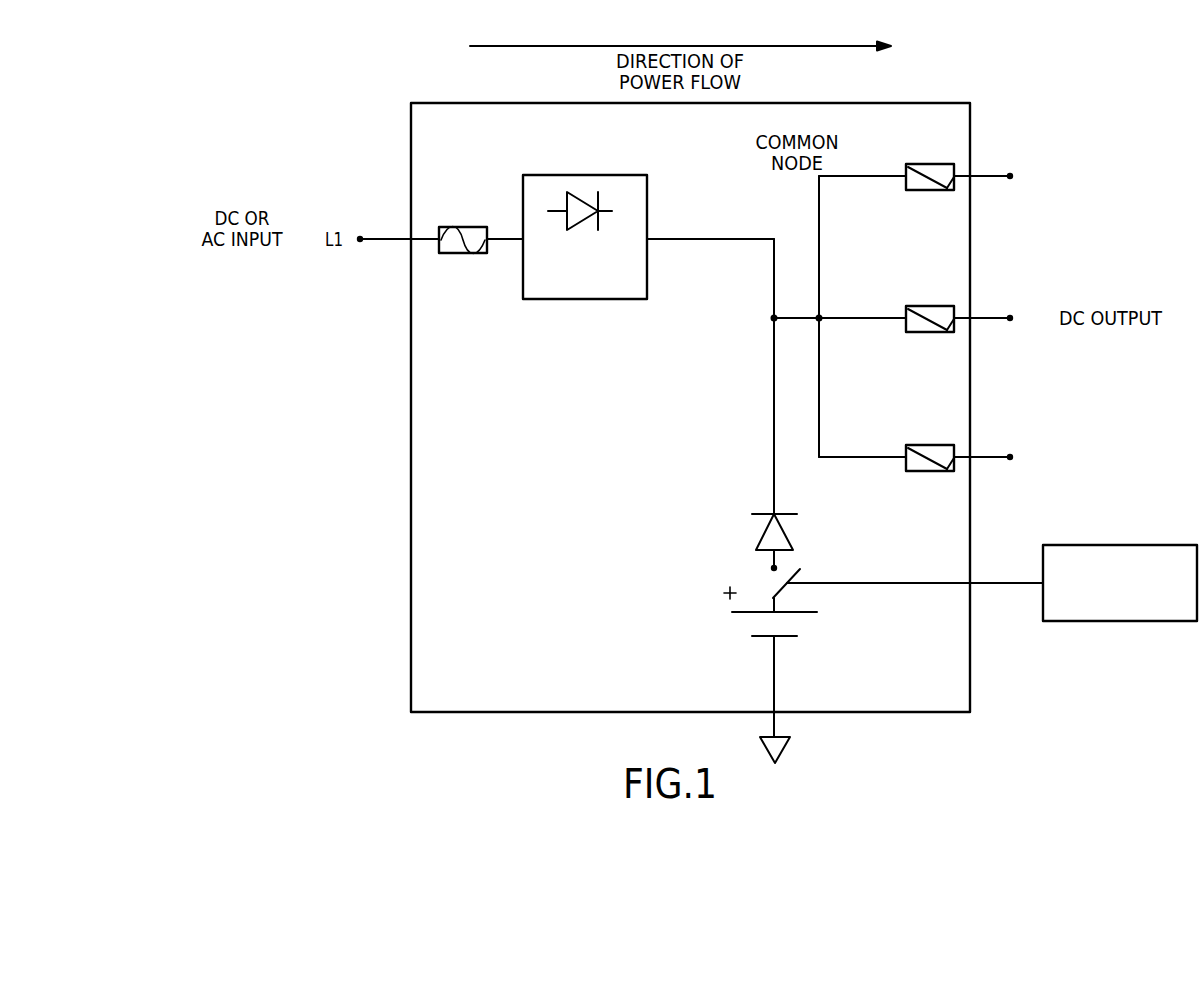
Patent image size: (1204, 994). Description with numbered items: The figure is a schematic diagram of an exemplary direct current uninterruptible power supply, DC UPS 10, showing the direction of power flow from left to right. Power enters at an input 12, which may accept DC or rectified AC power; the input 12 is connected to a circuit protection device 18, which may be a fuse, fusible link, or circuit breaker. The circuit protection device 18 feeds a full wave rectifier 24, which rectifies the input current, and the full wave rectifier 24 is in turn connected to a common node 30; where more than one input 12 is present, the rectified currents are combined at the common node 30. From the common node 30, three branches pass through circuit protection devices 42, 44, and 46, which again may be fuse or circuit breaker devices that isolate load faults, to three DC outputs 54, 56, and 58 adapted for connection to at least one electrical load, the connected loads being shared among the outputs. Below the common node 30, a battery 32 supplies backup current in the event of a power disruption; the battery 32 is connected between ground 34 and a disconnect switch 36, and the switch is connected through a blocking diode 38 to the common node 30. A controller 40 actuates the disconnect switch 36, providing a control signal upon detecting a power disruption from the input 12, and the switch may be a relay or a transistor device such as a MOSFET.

The DC UPS 10 is at (1021, 92).
The input 12 is at (360, 239).
The circuit protection device 18 is at (466, 227).
The full wave rectifier 24 is at (647, 205).
The common node 30 is at (797, 318).
The battery 32 is at (758, 637).
The ground 34 is at (790, 745).
The disconnect switch 36 is at (800, 569).
The blocking diode 38 is at (795, 542).
The controller 40 is at (1128, 545).
The circuit protection device 42 is at (920, 164).
The circuit protection device 44 is at (920, 306).
The circuit protection device 46 is at (920, 445).
The DC output 54 is at (1011, 176).
The DC output 56 is at (1011, 318).
The DC output 58 is at (1011, 457).